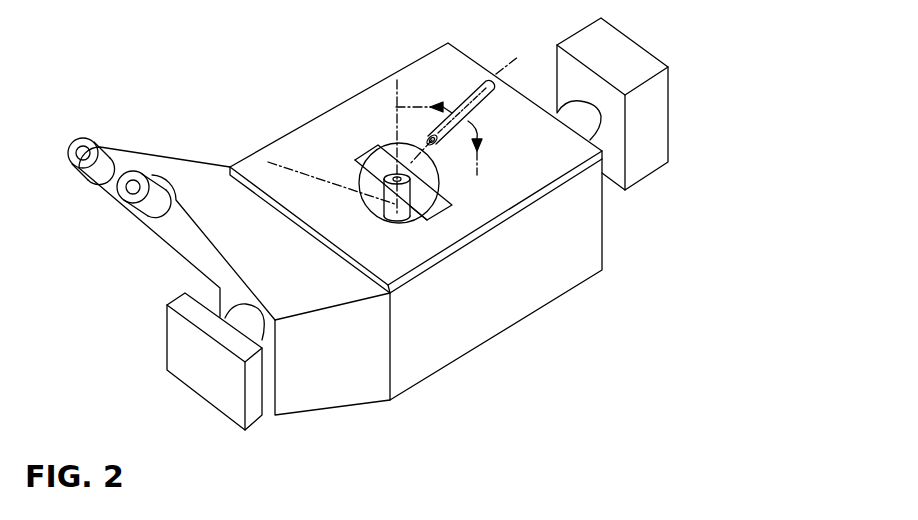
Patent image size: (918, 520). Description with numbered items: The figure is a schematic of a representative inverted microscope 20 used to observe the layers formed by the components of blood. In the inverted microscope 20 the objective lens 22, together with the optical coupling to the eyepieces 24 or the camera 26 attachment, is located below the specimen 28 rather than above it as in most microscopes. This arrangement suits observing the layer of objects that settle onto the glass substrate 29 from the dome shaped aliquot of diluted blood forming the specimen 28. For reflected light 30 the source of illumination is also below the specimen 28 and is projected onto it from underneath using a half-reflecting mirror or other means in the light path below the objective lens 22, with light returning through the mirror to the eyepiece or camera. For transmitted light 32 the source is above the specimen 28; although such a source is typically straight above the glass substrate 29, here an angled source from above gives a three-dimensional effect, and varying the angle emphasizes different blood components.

The inverted microscope 20 is at (505, 333).
The objective lens 22 is at (283, 168).
The eyepieces 24 is at (106, 205).
The camera 26 is at (215, 390).
The specimen 28 is at (394, 174).
The glass substrate 29 is at (443, 201).
The reflected light 30 is at (645, 178).
The transmitted light 32 is at (470, 67).